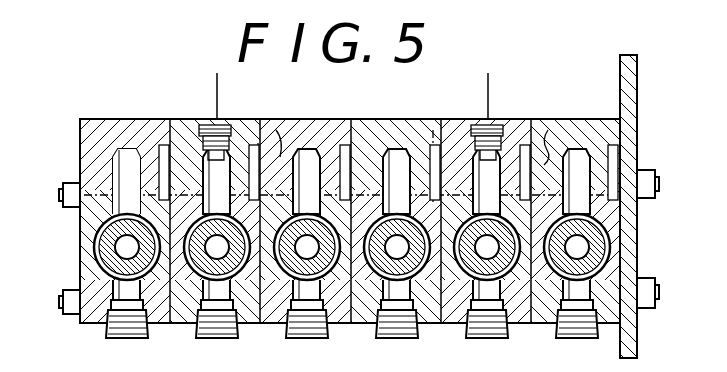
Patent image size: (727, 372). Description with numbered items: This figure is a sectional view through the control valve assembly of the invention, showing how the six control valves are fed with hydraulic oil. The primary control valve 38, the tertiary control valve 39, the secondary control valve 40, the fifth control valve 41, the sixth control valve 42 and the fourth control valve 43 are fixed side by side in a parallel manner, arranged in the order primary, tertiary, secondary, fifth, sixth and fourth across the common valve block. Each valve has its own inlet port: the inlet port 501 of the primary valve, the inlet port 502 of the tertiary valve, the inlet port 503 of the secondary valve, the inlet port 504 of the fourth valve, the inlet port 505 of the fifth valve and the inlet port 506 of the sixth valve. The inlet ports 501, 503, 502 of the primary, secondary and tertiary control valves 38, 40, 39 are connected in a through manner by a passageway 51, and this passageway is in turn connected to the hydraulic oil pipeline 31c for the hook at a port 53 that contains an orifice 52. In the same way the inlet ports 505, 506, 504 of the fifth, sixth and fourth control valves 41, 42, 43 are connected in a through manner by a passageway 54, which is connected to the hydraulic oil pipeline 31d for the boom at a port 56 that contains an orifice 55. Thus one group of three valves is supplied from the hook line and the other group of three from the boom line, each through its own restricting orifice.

The hydraulic oil pipeline for the hook 31c is at (488, 103).
The hydraulic oil pipeline for the boom 31d is at (217, 103).
The primary control valve 38 is at (558, 280).
The tertiary control valve 39 is at (378, 277).
The secondary control valve 40 is at (466, 280).
The fifth control valve 41 is at (102, 278).
The sixth control valve 42 is at (286, 282).
The fourth control valve 43 is at (195, 280).
The passageway 51 is at (548, 130).
The orifice 52 is at (488, 153).
The port 53 is at (474, 128).
The passageway 54 is at (283, 130).
The orifice 55 is at (216, 152).
The port 56 is at (206, 130).
The inlet port of the primary control valve 501 is at (573, 227).
The inlet port of the tertiary control valve 502 is at (390, 235).
The inlet port of the secondary control valve 503 is at (481, 227).
The inlet port of the fourth control valve 504 is at (111, 178).
The inlet port of the fifth control valve 505 is at (301, 229).
The inlet port of the sixth control valve 506 is at (210, 228).